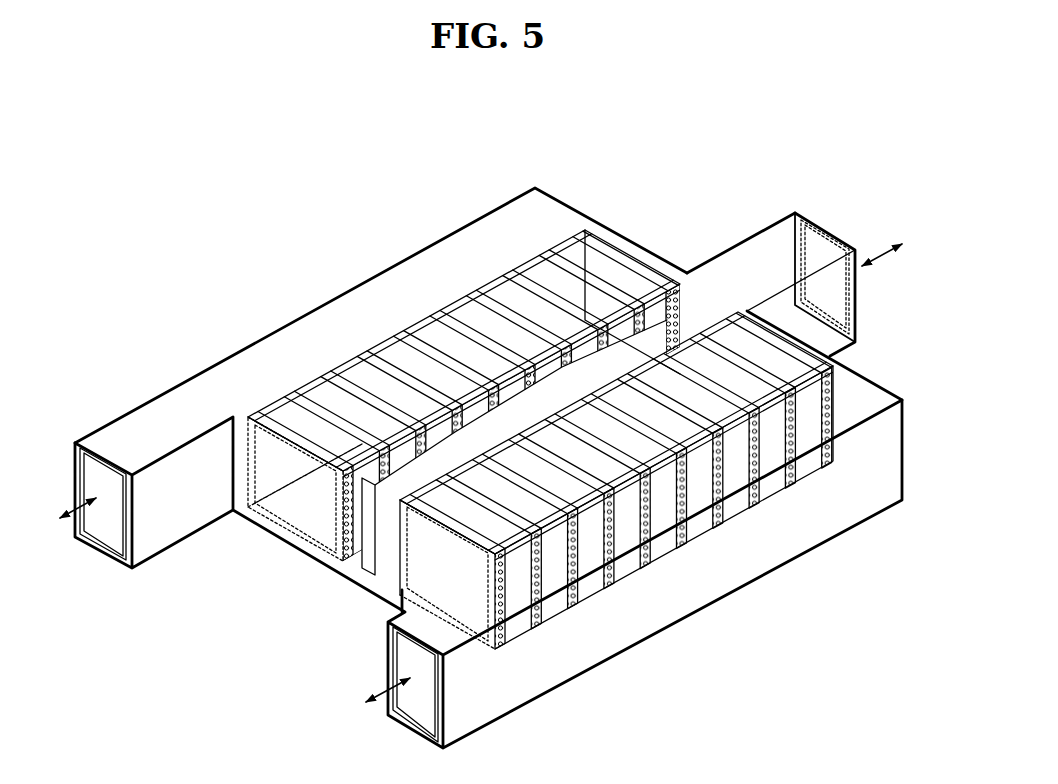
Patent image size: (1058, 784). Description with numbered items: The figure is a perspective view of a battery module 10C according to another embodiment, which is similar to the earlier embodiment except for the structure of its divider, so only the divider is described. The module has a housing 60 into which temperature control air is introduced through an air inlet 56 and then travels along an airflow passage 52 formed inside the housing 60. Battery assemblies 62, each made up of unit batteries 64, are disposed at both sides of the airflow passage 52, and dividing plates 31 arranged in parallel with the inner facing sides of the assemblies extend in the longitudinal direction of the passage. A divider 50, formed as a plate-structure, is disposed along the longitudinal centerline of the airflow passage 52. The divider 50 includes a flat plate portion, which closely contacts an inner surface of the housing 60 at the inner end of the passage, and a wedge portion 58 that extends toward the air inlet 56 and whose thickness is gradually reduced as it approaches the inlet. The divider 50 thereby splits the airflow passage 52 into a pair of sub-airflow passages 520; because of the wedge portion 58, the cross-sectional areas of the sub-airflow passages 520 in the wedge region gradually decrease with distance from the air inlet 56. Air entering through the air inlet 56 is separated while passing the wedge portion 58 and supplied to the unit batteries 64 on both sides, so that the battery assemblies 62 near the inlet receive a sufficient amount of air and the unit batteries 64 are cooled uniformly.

The battery module 10C is at (740, 151).
The dividing plate 31 is at (440, 437).
The divider 50 is at (543, 378).
The airflow passage 52 is at (673, 275).
The air inlet 56 is at (856, 305).
The wedge portion 58 is at (637, 350).
The housing 60 is at (540, 183).
The battery assembly 62 is at (356, 366).
The unit battery 64 is at (330, 402).
The sub-airflow passage 520 is at (393, 575).